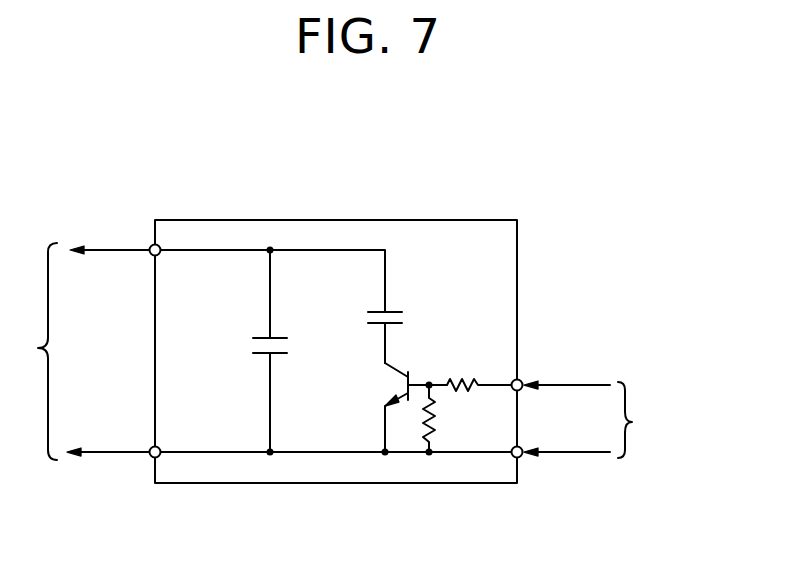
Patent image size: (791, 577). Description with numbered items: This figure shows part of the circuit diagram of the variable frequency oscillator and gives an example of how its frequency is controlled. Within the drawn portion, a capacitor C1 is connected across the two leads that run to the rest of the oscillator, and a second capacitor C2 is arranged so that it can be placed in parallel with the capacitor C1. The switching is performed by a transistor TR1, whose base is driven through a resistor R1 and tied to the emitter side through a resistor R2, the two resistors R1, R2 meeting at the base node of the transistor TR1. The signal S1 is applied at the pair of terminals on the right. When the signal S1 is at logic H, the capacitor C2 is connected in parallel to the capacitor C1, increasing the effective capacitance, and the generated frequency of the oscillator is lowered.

The capacitor C1 is at (253, 351).
The capacitor C2 is at (371, 321).
The transistor TR1 is at (378, 399).
The resistor R1 is at (472, 369).
The resistor R2 is at (449, 420).
The signal S1 is at (598, 419).